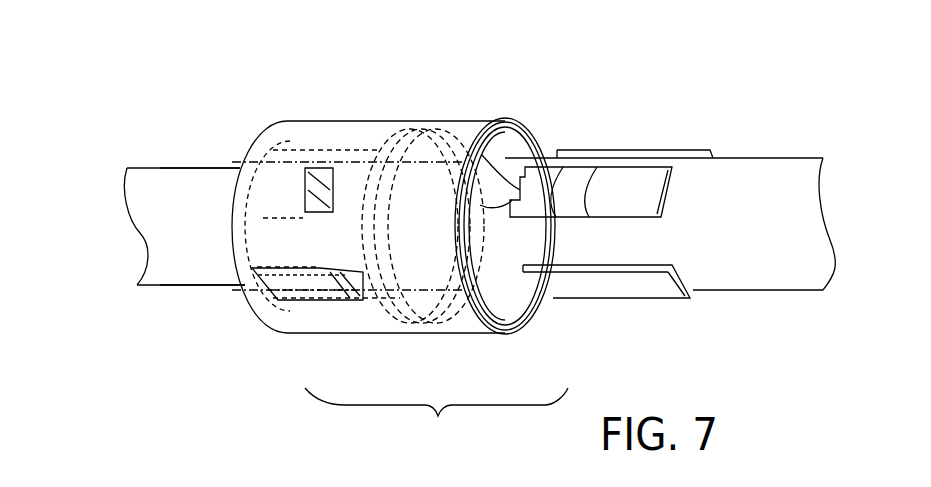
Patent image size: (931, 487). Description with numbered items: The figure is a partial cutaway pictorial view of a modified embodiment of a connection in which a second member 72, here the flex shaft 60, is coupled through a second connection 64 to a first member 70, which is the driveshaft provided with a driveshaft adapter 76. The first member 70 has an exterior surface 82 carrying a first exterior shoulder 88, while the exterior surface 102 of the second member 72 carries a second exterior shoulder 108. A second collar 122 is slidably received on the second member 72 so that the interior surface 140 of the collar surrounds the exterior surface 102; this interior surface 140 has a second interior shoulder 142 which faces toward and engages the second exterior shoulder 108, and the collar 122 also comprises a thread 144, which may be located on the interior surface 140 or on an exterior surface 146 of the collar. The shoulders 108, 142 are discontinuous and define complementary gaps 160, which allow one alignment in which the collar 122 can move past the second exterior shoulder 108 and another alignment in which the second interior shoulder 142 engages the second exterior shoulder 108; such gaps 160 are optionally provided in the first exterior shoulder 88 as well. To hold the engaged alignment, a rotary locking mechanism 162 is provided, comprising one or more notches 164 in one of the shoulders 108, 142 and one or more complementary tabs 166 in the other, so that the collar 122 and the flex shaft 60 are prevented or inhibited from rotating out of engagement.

The flex shaft 60 is at (170, 267).
The second connection 64 is at (512, 103).
The first member 70 is at (772, 173).
The second member 72 is at (172, 190).
The driveshaft adapter 76 is at (802, 172).
The exterior surface 82 is at (805, 298).
The first exterior shoulder 88 is at (711, 153).
The exterior surface 102 is at (200, 272).
The second exterior shoulder 108 is at (538, 128).
The second collar 122 is at (348, 103).
The interior surface 140 is at (538, 303).
The second interior shoulder 142 is at (303, 200).
The thread 144 is at (527, 118).
The exterior surface 146 is at (428, 118).
The complementary gaps 160 is at (298, 195).
The rotary locking mechanism 162 is at (436, 418).
The notches 164 is at (478, 126).
The complementary tabs 166 is at (328, 278).